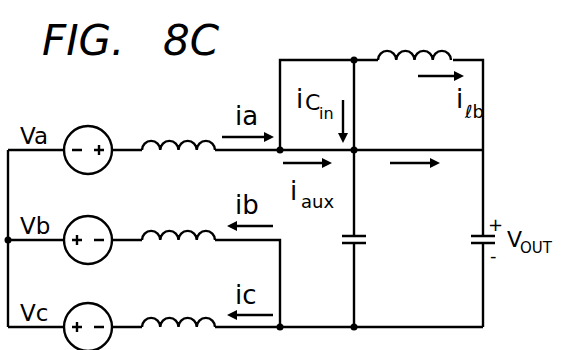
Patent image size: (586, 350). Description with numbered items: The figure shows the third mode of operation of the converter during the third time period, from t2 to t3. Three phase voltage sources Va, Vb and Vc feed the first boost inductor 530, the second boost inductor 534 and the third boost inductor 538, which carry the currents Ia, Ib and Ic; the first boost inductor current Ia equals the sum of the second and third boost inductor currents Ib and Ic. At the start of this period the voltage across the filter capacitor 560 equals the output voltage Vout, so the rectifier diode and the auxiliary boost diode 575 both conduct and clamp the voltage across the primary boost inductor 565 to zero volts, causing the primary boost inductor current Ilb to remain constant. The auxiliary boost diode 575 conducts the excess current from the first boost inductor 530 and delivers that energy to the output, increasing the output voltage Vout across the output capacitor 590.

The first boost inductor 530 is at (172, 138).
The second boost inductor 534 is at (172, 228).
The third boost inductor 538 is at (172, 315).
The primary boost inductor 565 is at (441, 50).
The filter capacitor 560 is at (370, 240).
The output capacitor 590 is at (470, 241).
The auxiliary boost diode 575 is at (416, 185).